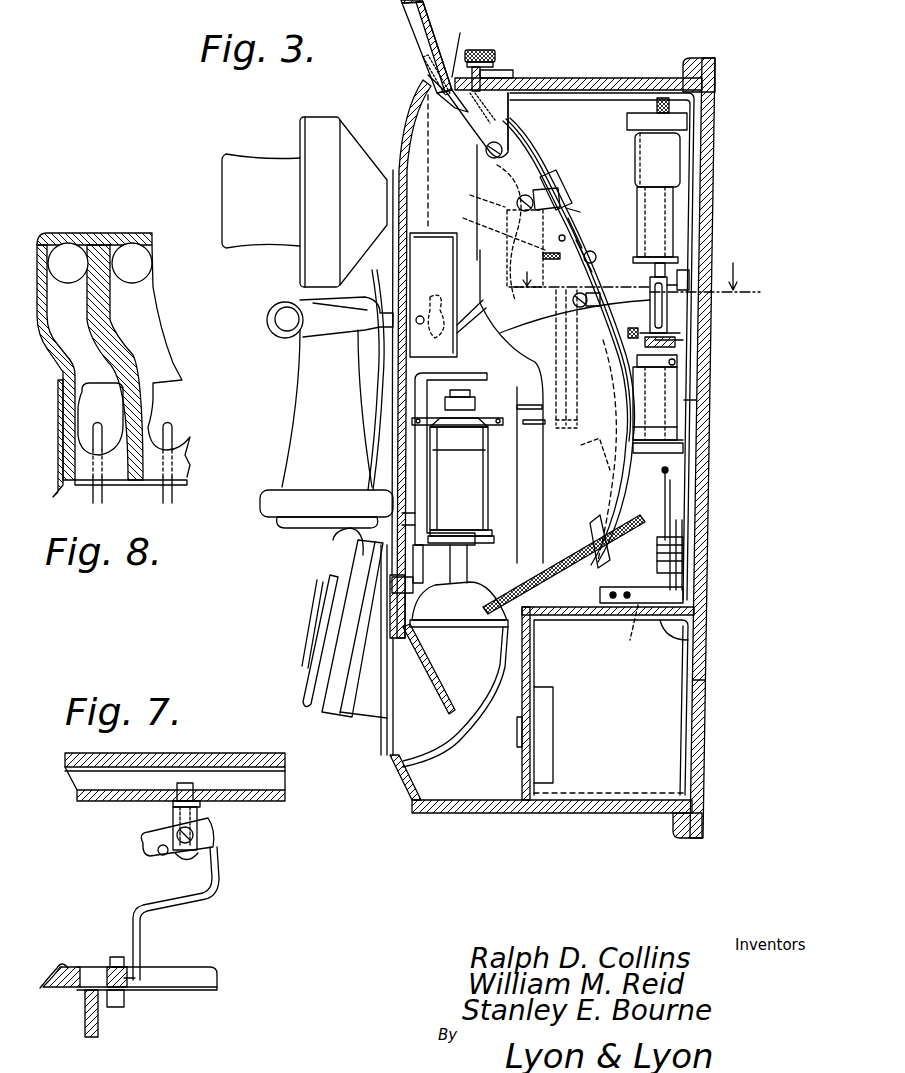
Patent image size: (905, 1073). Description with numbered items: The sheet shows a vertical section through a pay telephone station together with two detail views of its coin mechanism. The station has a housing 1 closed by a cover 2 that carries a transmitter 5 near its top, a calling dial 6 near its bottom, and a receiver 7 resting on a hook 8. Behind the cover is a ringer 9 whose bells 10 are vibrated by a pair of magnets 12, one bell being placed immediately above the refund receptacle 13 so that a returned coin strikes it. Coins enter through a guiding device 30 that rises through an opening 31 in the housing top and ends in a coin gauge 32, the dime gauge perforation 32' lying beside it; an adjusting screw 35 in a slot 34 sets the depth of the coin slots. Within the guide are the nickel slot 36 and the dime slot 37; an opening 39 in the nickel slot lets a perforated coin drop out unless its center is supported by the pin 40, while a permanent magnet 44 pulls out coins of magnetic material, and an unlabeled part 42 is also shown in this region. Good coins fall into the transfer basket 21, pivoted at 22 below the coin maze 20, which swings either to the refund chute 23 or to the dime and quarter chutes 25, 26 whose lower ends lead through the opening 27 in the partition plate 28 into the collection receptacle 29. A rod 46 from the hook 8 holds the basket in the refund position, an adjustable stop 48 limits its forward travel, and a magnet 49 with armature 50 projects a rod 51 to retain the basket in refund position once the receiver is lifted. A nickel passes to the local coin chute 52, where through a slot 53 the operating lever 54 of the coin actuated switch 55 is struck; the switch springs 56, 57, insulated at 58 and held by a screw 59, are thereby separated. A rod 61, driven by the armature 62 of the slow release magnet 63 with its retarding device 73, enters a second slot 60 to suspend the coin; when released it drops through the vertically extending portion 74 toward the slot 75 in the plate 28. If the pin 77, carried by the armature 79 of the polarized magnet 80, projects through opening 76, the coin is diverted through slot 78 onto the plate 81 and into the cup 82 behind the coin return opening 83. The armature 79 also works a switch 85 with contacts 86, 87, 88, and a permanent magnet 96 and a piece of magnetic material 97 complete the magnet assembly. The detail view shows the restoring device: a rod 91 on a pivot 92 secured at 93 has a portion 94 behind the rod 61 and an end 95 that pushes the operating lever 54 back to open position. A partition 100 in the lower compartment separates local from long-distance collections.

In FIG. 3, the housing 1 is at (618, 72).
In FIG. 7, the housing 1 is at (240, 733).
In FIG. 3, the cover 2 is at (415, 90).
In FIG. 3, the transmitter 5 is at (312, 132).
In FIG. 3, the calling dial 6 is at (312, 609).
In FIG. 3, the receiver 7 is at (300, 398).
In FIG. 3, the hook 8 is at (272, 333).
In FIG. 3, the ringer 9 is at (495, 490).
In FIG. 3, the bells 10 is at (437, 588).
In FIG. 3, the magnets 12 is at (475, 470).
In FIG. 3, the refund receptacle 13 is at (392, 757).
In FIG. 3, the coin maze 20 is at (600, 463).
In FIG. 3, the transfer basket 21 is at (588, 258).
In FIG. 3, the pivot 22 is at (575, 232).
In FIG. 3, the refund chute 23 is at (690, 405).
In FIG. 3, the second chute 25 is at (574, 413).
In FIG. 3, the third chute 26 is at (574, 445).
In FIG. 3, the opening 27 is at (634, 632).
In FIG. 3, the partition plate 28 is at (690, 630).
In FIG. 3, the collection receptacle 29 is at (700, 683).
In FIG. 3, the guiding device 30 is at (423, 60).
In FIG. 8, the guiding device 30 is at (47, 304).
In FIG. 3, the opening 31 is at (464, 43).
In FIG. 3, the coin gauge 32 is at (419, 56).
In FIG. 8, the coin gauge 32 is at (68, 238).
In FIG. 8, the perforation for the dime gauge 32' is at (132, 237).
In FIG. 3, the slot 34 is at (505, 72).
In FIG. 3, the adjusting screw 35 is at (490, 50).
In FIG. 3, the nickel slot 36 is at (462, 110).
In FIG. 8, the nickel slot 36 is at (60, 342).
In FIG. 8, the dime slot 37 is at (155, 305).
In FIG. 3, the opening 39 is at (497, 167).
In FIG. 8, the opening 39 is at (82, 418).
In FIG. 3, the pin 40 is at (474, 192).
In FIG. 8, the pin 40 is at (95, 437).
In FIG. 3, the cam 42 is at (480, 322).
In FIG. 3, the permanent magnet 44 is at (533, 150).
In FIG. 3, the rod 46 is at (480, 305).
In FIG. 3, the adjustable stop 48 is at (490, 227).
In FIG. 3, the magnet 49 is at (520, 355).
In FIG. 3, the armature 50 is at (530, 427).
In FIG. 3, the rod 51 is at (505, 375).
In FIG. 3, the local coin chute 52 is at (660, 330).
In FIG. 7, the local coin chute 52 is at (62, 966).
In FIG. 3, the slot 53 is at (655, 337).
In FIG. 7, the slot 53 is at (107, 960).
In FIG. 3, the operating lever 54 is at (573, 357).
In FIG. 7, the operating lever 54 is at (140, 973).
In FIG. 3, the coin actuated switch 55 is at (578, 212).
In FIG. 3, the spring 56 is at (596, 258).
In FIG. 3, the spring 57 is at (578, 248).
In FIG. 3, the insulation 58 is at (556, 185).
In FIG. 3, the screw 59 is at (524, 212).
In FIG. 3, the second slot 60 is at (606, 420).
In FIG. 3, the rod 61 is at (660, 230).
In FIG. 7, the rod 61 is at (162, 857).
In FIG. 3, the armature 62 is at (672, 125).
In FIG. 3, the magnet 63 is at (672, 198).
In FIG. 3, the retarding device 73 is at (672, 153).
In FIG. 3, the vertically extending portion 74 is at (650, 427).
In FIG. 3, the slot 75 is at (600, 607).
In FIG. 3, the opening 76 is at (600, 535).
In FIG. 3, the pin 77 is at (666, 487).
In FIG. 3, the slot 78 is at (620, 492).
In FIG. 3, the armature 79 is at (660, 362).
In FIG. 3, the polarized magnet 80 is at (660, 385).
In FIG. 3, the plate 81 is at (485, 600).
In FIG. 3, the cup 82 is at (468, 745).
In FIG. 3, the coin return opening 83 is at (386, 737).
In FIG. 3, the switch 85 is at (686, 533).
In FIG. 3, the contact 86 is at (675, 545).
In FIG. 3, the contact 87 is at (670, 500).
In FIG. 3, the contact 88 is at (676, 520).
In FIG. 3, the rod 91 is at (630, 296).
In FIG. 7, the rod 91 is at (141, 924).
In FIG. 3, the pivot 92 is at (685, 275).
In FIG. 3, the securing means 93 is at (690, 292).
In FIG. 7, the securing means 93 is at (173, 812).
In FIG. 7, the portion 94 is at (143, 845).
In FIG. 3, the end 95 is at (575, 312).
In FIG. 7, the end 95 is at (125, 992).
In FIG. 3, the permanent magnet 96 is at (665, 460).
In FIG. 3, the piece of magnetic material 97 is at (670, 340).
In FIG. 3, the partition 100 is at (668, 730).